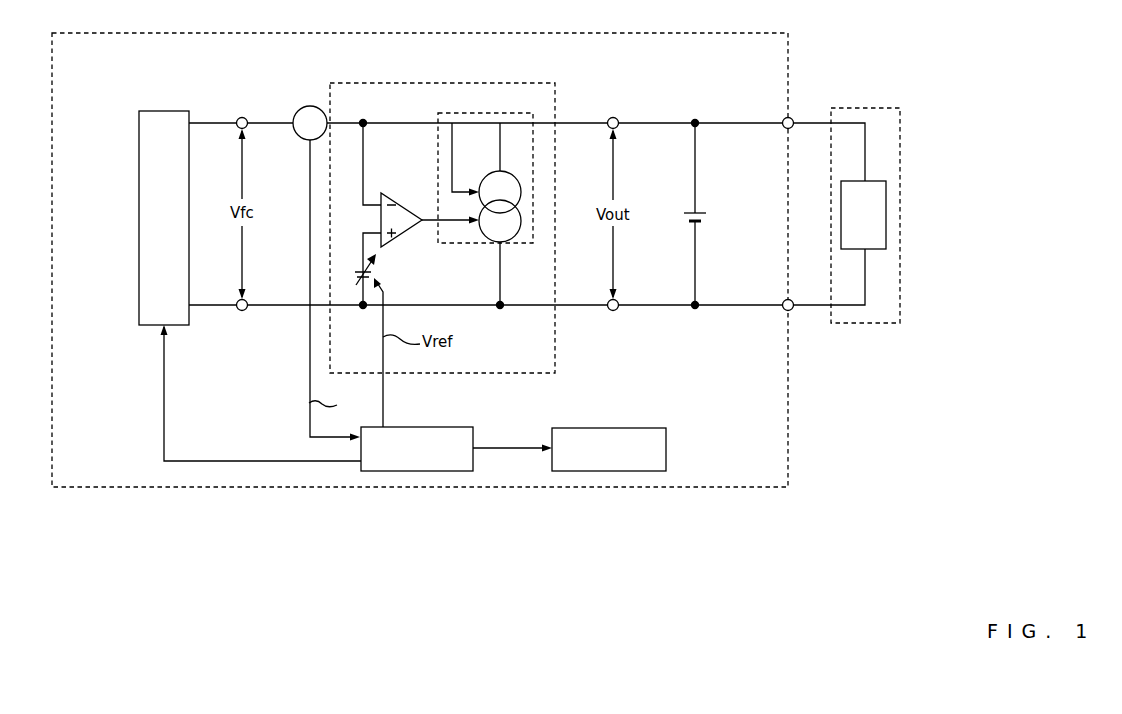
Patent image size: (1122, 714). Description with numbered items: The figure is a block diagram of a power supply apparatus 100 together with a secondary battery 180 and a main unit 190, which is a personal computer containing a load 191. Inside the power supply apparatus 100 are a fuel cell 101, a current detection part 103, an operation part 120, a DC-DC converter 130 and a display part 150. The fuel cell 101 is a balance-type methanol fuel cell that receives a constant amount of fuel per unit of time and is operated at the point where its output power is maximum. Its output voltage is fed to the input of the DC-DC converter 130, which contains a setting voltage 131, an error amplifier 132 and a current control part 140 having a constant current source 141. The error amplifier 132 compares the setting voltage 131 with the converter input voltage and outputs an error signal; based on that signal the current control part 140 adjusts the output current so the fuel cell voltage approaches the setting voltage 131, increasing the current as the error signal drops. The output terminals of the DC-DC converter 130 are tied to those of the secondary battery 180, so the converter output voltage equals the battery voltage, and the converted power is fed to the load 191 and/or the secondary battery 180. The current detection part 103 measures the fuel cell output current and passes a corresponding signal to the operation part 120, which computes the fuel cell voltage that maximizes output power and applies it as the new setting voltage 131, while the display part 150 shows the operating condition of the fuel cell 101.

The power supply apparatus 100 is at (362, 488).
The fuel cell 101 is at (146, 112).
The current detection part 103 is at (298, 108).
The operation part 120 is at (432, 427).
The DC-DC converter 130 is at (333, 82).
The setting voltage 131 is at (360, 265).
The error amplifier 132 is at (394, 193).
The current control part 140 is at (454, 112).
The constant current source 141 is at (497, 171).
The display part 150 is at (627, 428).
The secondary battery 180 is at (698, 226).
The main unit 190 is at (838, 108).
The load 191 is at (865, 180).